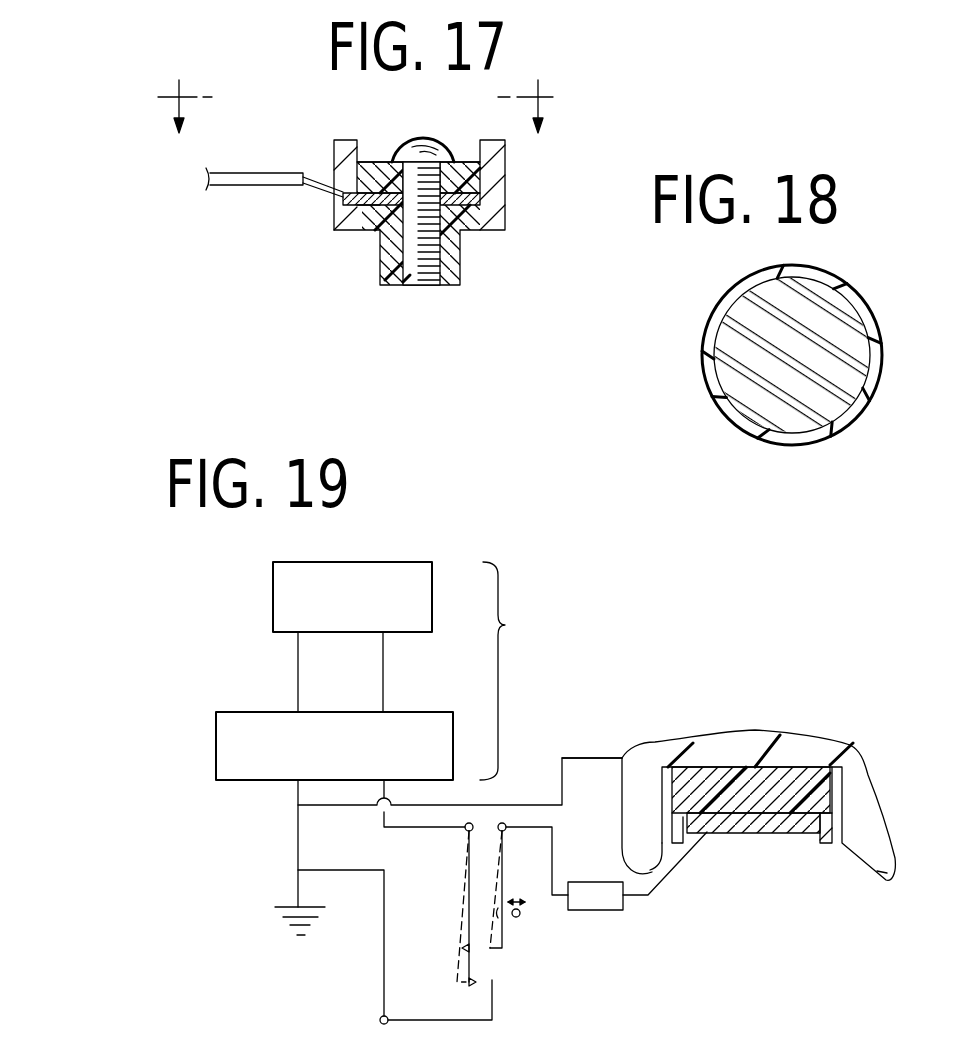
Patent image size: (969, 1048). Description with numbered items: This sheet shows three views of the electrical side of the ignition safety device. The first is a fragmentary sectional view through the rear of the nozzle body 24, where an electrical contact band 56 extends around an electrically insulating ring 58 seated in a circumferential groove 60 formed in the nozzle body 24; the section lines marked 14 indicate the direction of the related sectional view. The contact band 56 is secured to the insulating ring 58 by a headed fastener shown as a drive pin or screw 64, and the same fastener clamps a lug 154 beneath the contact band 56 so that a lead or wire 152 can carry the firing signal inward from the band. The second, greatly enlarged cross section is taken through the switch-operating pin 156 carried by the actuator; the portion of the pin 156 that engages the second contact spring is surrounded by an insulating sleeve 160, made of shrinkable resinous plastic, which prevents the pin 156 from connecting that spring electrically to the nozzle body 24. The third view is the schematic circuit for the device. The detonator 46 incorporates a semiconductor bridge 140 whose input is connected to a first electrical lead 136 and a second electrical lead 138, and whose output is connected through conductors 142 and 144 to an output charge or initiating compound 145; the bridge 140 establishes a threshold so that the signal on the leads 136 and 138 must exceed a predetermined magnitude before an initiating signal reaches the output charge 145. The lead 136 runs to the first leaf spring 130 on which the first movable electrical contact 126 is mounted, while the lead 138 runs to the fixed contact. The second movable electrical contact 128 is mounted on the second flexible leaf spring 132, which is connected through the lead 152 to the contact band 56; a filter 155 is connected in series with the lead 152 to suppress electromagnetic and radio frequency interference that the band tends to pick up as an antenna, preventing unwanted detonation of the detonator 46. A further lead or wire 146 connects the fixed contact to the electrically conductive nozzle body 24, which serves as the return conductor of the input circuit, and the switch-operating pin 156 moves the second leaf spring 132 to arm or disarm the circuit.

In FIG. 17, the section line 14- 14 is at (361, 98).
In FIG. 17, the drive pin or screw 64 is at (403, 140).
In FIG. 17, the electrical contact band 56 is at (460, 160).
In FIG. 19, the electrical contact band 56 is at (732, 834).
In FIG. 17, the insulating ring 58 is at (505, 178).
In FIG. 19, the insulating ring 58 is at (822, 787).
In FIG. 17, the lead or wire 152 is at (318, 185).
In FIG. 19, the lead or wire 152 is at (673, 868).
In FIG. 17, the lug 154 is at (370, 206).
In FIG. 18, the insulating sleeve or tube 160 is at (708, 387).
In FIG. 18, the switch-operating pin 156 is at (777, 415).
In FIG. 19, the switch-operating pin 156 is at (521, 916).
In FIG. 19, the output charge or initiating compound 145 is at (432, 593).
In FIG. 19, the conductor 144 is at (298, 678).
In FIG. 19, the conductor 142 is at (383, 680).
In FIG. 19, the semiconductor bridge 140 is at (216, 752).
In FIG. 19, the second electrical lead 138 is at (298, 793).
In FIG. 19, the first electrical lead 136 is at (430, 828).
In FIG. 19, the second leaf spring 132 is at (535, 858).
In FIG. 19, the first leaf spring 130 is at (467, 910).
In FIG. 19, the second movable electrical contact 128 is at (482, 950).
In FIG. 19, the first movable electrical contact 126 is at (486, 983).
In FIG. 19, the lead or wire 146 is at (590, 758).
In FIG. 19, the nozzle body 24 is at (688, 742).
In FIG. 19, the circumferential groove or channel 60 is at (828, 845).
In FIG. 19, the detonator 46 is at (588, 671).
In FIG. 19, the filter 155 is at (620, 912).